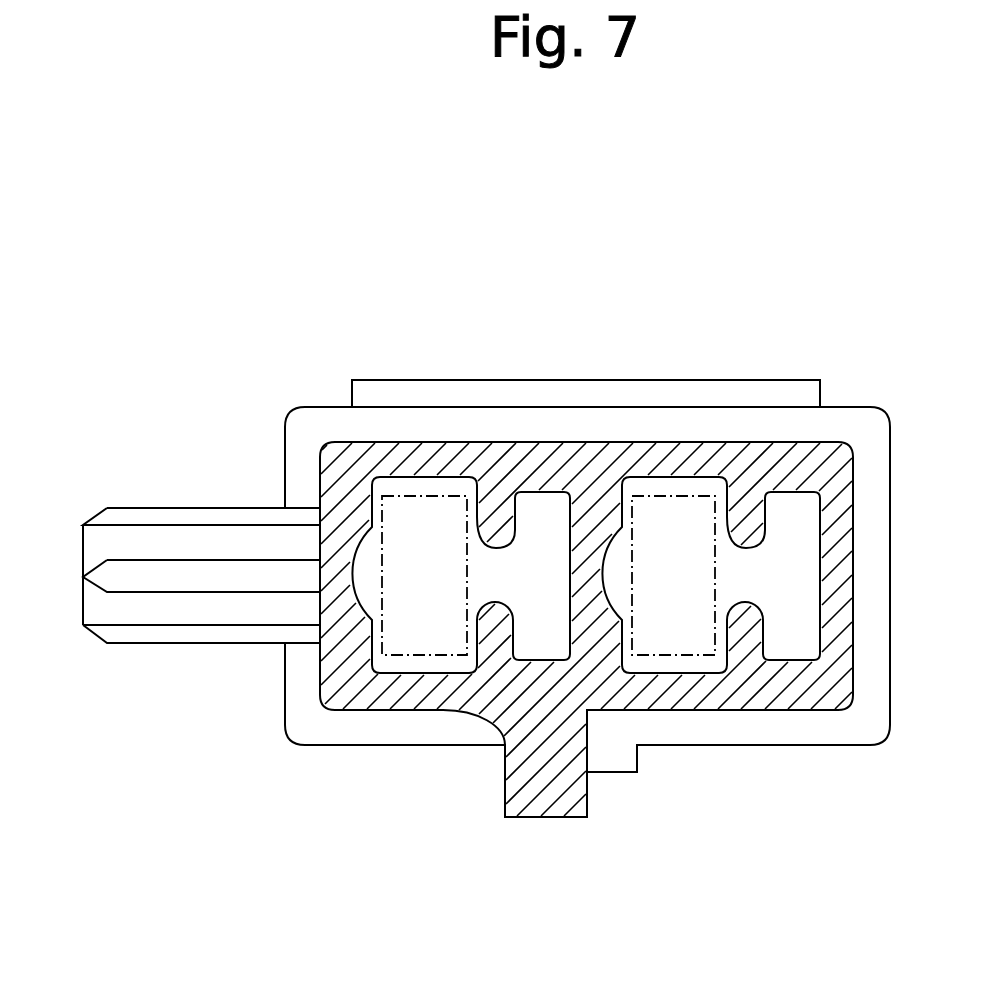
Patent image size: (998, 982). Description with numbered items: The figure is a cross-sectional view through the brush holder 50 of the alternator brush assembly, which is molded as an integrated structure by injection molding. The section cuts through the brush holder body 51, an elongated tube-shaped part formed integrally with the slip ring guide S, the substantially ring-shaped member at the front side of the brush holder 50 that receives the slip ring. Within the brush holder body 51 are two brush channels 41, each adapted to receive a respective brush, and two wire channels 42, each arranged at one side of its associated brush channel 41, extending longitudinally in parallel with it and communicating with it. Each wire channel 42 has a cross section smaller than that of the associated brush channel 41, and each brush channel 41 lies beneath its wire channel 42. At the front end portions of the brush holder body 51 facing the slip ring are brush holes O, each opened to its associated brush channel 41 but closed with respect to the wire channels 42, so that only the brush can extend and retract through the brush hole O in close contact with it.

The brush holder 50 is at (905, 356).
The brush holder body 51 is at (795, 468).
The brush channel 41 is at (427, 630).
The wire channel 42 is at (795, 578).
The slip ring guide S is at (744, 392).
The brush hole O is at (423, 490).